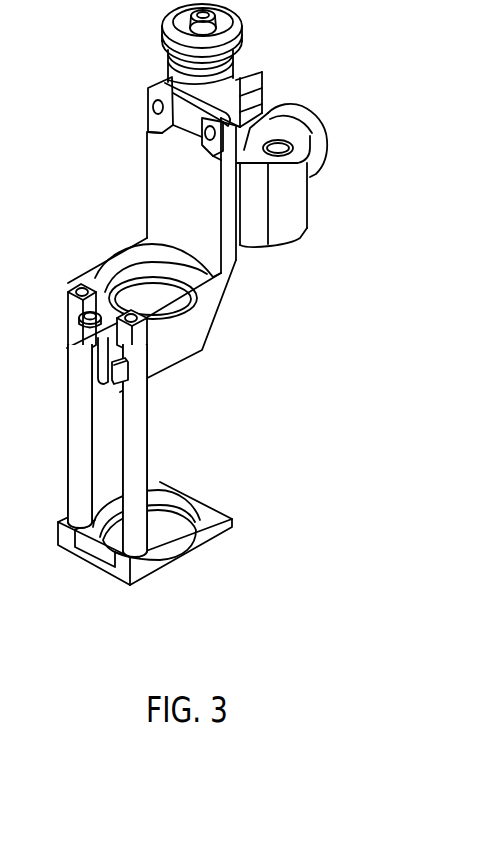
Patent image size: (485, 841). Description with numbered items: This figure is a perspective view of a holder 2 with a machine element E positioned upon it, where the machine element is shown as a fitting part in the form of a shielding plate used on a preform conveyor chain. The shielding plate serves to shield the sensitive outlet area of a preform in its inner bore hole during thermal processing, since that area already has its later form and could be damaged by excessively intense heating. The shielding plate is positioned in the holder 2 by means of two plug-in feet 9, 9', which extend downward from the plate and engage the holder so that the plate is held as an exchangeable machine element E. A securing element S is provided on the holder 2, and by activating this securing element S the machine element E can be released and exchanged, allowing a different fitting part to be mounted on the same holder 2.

The holder 2 is at (317, 202).
The securing element S is at (140, 390).
The plug-in foot 9 is at (168, 451).
The plug-in foot 9' is at (55, 436).
The machine element E is at (80, 562).